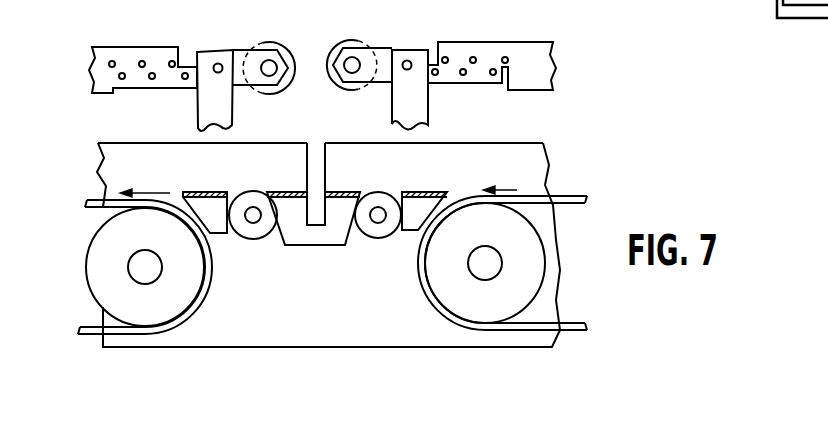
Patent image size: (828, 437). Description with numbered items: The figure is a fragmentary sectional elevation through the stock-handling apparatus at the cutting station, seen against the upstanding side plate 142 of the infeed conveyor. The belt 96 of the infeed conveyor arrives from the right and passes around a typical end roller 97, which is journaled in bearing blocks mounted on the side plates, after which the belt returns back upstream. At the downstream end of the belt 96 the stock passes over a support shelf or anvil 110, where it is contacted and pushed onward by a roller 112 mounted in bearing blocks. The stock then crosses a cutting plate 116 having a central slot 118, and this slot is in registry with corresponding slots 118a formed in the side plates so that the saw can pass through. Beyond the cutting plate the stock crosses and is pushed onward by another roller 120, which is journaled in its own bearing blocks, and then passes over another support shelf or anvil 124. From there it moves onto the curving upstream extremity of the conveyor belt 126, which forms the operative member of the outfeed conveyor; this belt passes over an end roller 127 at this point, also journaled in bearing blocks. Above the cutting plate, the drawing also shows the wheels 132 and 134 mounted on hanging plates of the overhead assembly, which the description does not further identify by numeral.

The belt 96 is at (570, 193).
The end roller 97 is at (496, 231).
The support shelf or anvil 110 is at (428, 192).
The roller 112 is at (378, 218).
The cutting plate 116 is at (293, 192).
The central slot 118 is at (317, 196).
The slots in side plates 118a is at (313, 150).
The roller 120 is at (255, 218).
The support shelf or anvil 124 is at (203, 192).
The conveyor belt 126 is at (90, 201).
The end roller 127 is at (160, 240).
The cam wheel 132 is at (360, 42).
The cam wheel 134 is at (277, 42).
The side plate 142 is at (514, 153).